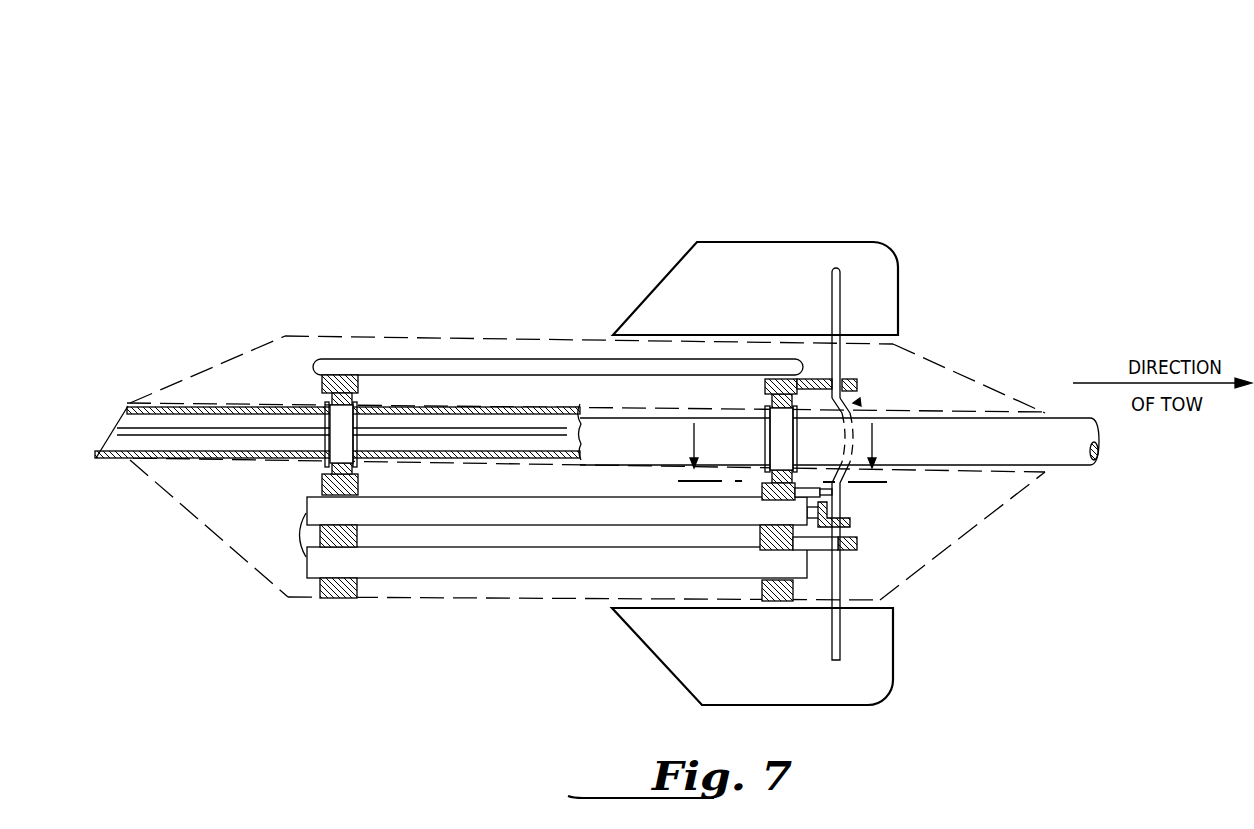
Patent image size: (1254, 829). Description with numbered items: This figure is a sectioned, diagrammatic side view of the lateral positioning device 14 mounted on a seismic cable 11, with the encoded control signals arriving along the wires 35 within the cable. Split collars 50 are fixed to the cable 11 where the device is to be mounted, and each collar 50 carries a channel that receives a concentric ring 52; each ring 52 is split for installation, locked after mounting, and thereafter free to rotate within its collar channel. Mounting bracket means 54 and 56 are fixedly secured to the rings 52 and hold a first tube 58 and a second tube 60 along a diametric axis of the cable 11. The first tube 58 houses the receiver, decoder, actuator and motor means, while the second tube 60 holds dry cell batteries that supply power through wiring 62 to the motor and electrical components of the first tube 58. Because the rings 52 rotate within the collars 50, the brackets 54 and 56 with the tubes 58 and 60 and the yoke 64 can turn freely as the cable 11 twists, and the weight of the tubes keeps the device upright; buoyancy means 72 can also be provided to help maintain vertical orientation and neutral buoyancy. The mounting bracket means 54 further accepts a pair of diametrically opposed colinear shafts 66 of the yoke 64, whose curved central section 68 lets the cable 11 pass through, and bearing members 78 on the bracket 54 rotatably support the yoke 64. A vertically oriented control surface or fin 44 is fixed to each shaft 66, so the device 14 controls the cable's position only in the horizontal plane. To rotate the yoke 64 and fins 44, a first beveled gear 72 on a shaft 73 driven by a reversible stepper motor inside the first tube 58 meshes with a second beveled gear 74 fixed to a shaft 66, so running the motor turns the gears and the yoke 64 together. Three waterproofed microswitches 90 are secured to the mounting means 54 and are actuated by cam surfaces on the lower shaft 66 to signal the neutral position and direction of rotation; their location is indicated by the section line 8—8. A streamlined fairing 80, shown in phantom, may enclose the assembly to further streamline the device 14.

The section line 8- 8 is at (784, 451).
The seismic cable 11 is at (1077, 443).
The lateral positioning device 14 is at (445, 318).
The wires 35 is at (114, 432).
The control surface or fin 44 is at (762, 272).
The split collar 50 is at (342, 432).
The concentric ring 52 is at (354, 400).
The mounting bracket means 54 is at (815, 380).
The mounting bracket means 56 is at (322, 384).
The first tube 58 is at (527, 517).
The second tube 60 is at (578, 565).
The wiring 62 is at (298, 545).
The yoke 64 is at (856, 402).
The shaft 66 is at (840, 300).
The curved central section 68 is at (875, 413).
The first beveled gear 72 is at (575, 362).
The shaft 73 is at (812, 520).
The second beveled gear 74 is at (852, 525).
The bearing members 78 is at (848, 378).
The streamlined fairing 80 is at (967, 374).
The microswitches 90 is at (813, 491).